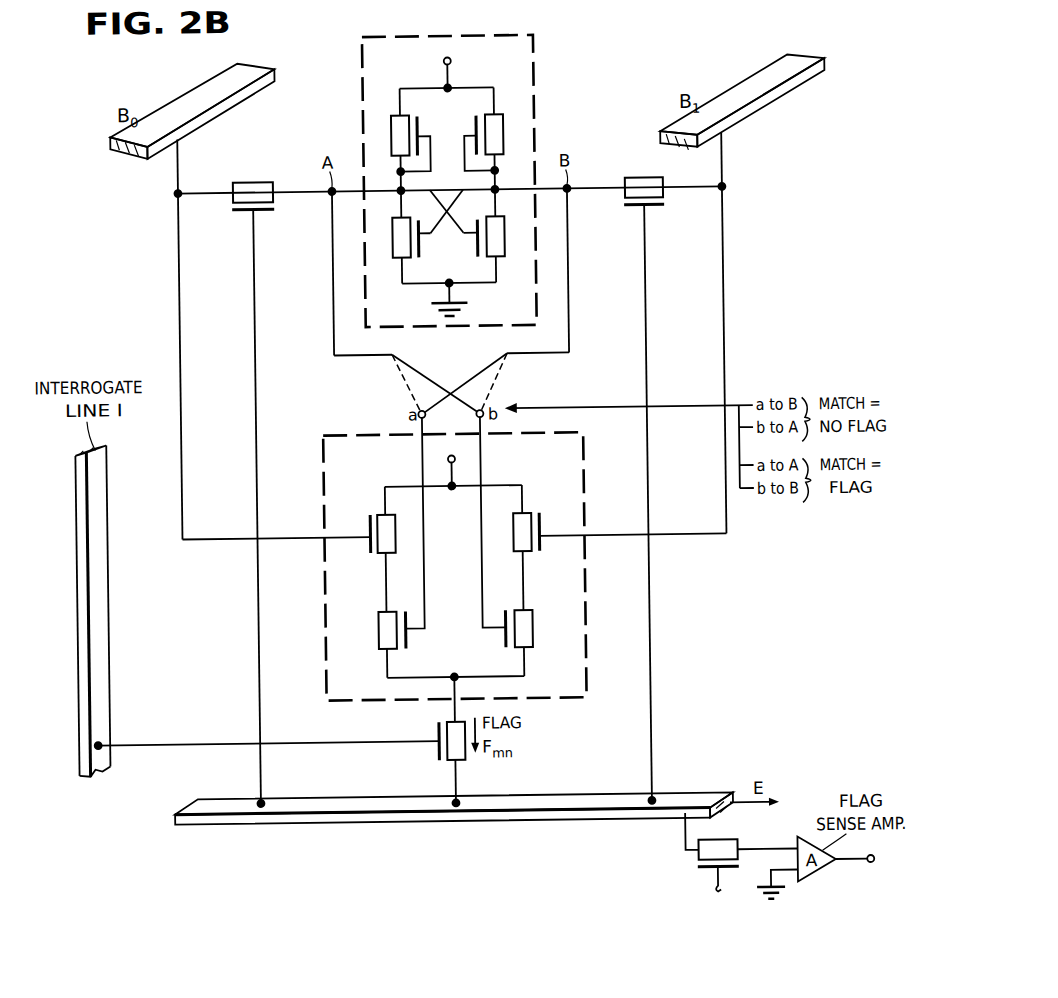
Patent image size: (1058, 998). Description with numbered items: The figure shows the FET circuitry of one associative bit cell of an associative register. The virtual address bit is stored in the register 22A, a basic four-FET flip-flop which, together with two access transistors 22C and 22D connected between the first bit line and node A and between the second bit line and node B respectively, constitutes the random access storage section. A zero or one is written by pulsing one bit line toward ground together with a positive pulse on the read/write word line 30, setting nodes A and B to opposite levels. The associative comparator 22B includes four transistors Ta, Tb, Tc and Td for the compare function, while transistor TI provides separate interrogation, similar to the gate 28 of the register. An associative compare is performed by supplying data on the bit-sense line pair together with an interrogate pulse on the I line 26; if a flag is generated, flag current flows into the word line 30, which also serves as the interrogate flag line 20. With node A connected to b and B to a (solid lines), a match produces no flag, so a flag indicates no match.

The interrogate flag line 20 is at (454, 779).
The register (basic four FET device flip-flop) 22A is at (538, 86).
The associative comparator 22B is at (324, 440).
The access transistor 22C is at (262, 183).
The access transistor 22D is at (641, 183).
The I line (interrogate line) 26 is at (180, 738).
The gate 28 is at (444, 724).
The read/write word line 30 is at (293, 820).